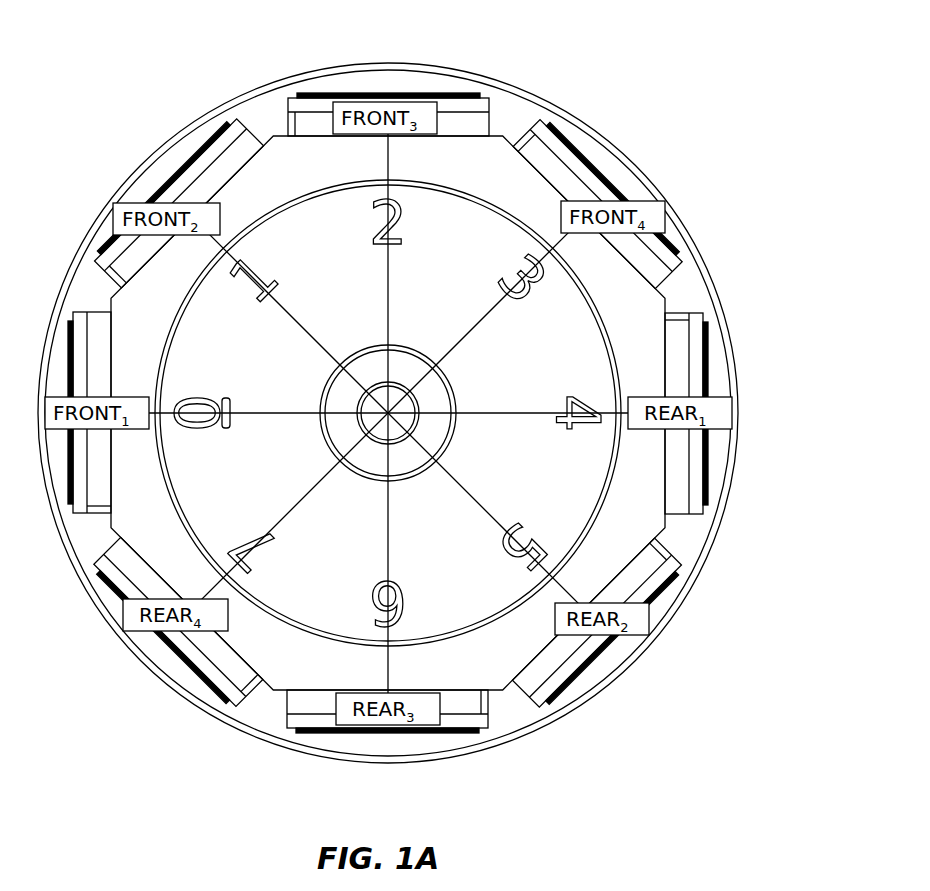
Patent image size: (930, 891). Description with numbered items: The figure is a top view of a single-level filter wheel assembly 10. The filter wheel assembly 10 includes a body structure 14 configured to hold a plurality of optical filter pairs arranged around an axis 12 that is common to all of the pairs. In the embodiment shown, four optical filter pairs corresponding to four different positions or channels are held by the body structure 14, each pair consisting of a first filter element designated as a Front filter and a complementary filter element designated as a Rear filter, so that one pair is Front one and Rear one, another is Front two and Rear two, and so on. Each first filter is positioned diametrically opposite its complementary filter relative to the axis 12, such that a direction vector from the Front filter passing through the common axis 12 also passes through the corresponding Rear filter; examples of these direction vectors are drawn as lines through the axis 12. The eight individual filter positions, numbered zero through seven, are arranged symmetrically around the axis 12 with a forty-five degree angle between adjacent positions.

The single-level filter wheel assembly 10 is at (648, 40).
The axis 12 is at (367, 373).
The body structure 14 is at (692, 285).